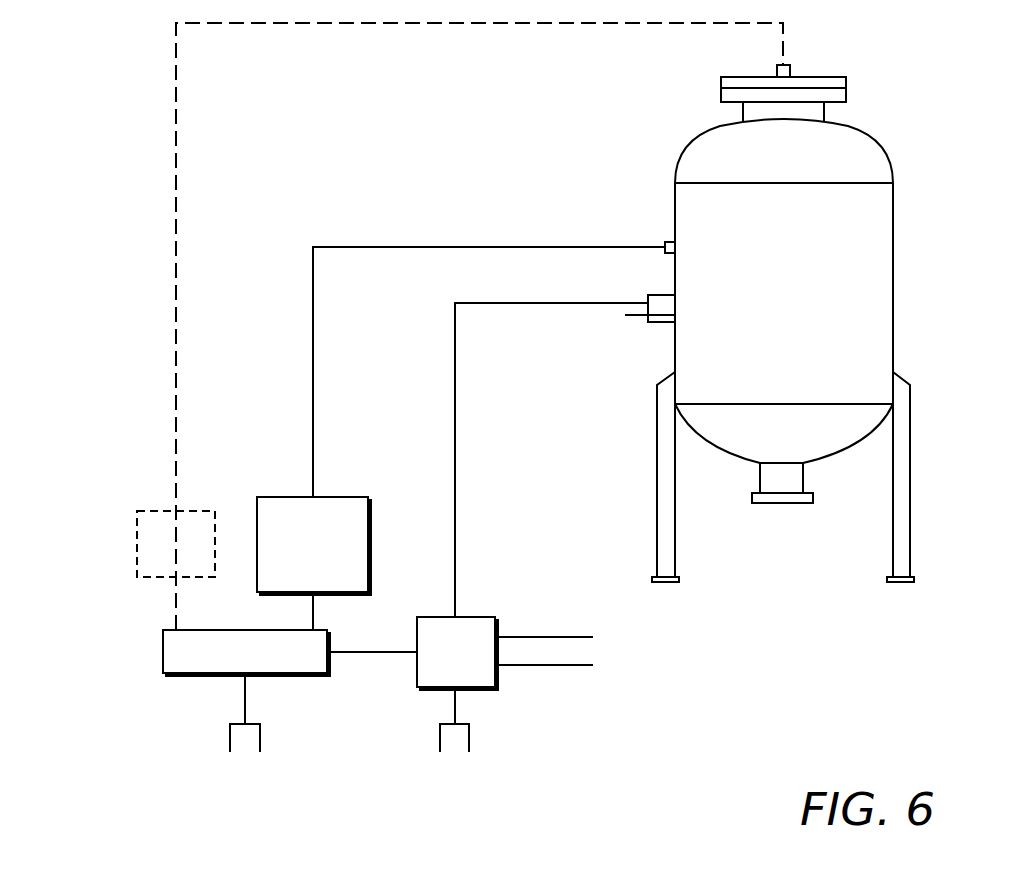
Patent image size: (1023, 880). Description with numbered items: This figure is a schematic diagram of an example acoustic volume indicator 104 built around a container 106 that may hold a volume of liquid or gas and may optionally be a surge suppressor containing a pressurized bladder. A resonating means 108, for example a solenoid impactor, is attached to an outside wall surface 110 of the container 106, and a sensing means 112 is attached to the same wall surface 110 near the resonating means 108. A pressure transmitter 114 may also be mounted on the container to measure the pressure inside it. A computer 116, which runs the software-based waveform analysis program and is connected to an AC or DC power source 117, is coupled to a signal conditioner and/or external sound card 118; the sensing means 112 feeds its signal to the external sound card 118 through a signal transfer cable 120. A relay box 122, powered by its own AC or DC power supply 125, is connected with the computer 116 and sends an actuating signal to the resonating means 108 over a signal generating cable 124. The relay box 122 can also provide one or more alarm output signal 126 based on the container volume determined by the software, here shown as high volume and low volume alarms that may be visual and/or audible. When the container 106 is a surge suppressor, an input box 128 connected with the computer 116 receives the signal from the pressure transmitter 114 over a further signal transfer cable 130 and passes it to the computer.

The acoustic volume indicator 104 is at (927, 126).
The container 106 is at (853, 318).
The resonating means 108 is at (640, 328).
The outside wall surface 110 is at (672, 352).
The sensing means 112 is at (670, 240).
The pressure transmitter 114 is at (791, 72).
The computer 116 is at (163, 650).
The power source 117 is at (230, 740).
The external sound card 118 is at (278, 497).
The signal transfer cable 120 is at (312, 372).
The relay box 122 is at (478, 617).
The signal generating cable 124 is at (455, 460).
The power supply 125 is at (440, 740).
The alarm output signal 126 is at (542, 637).
The input box 128 is at (157, 511).
The signal transfer cable 130 is at (176, 267).